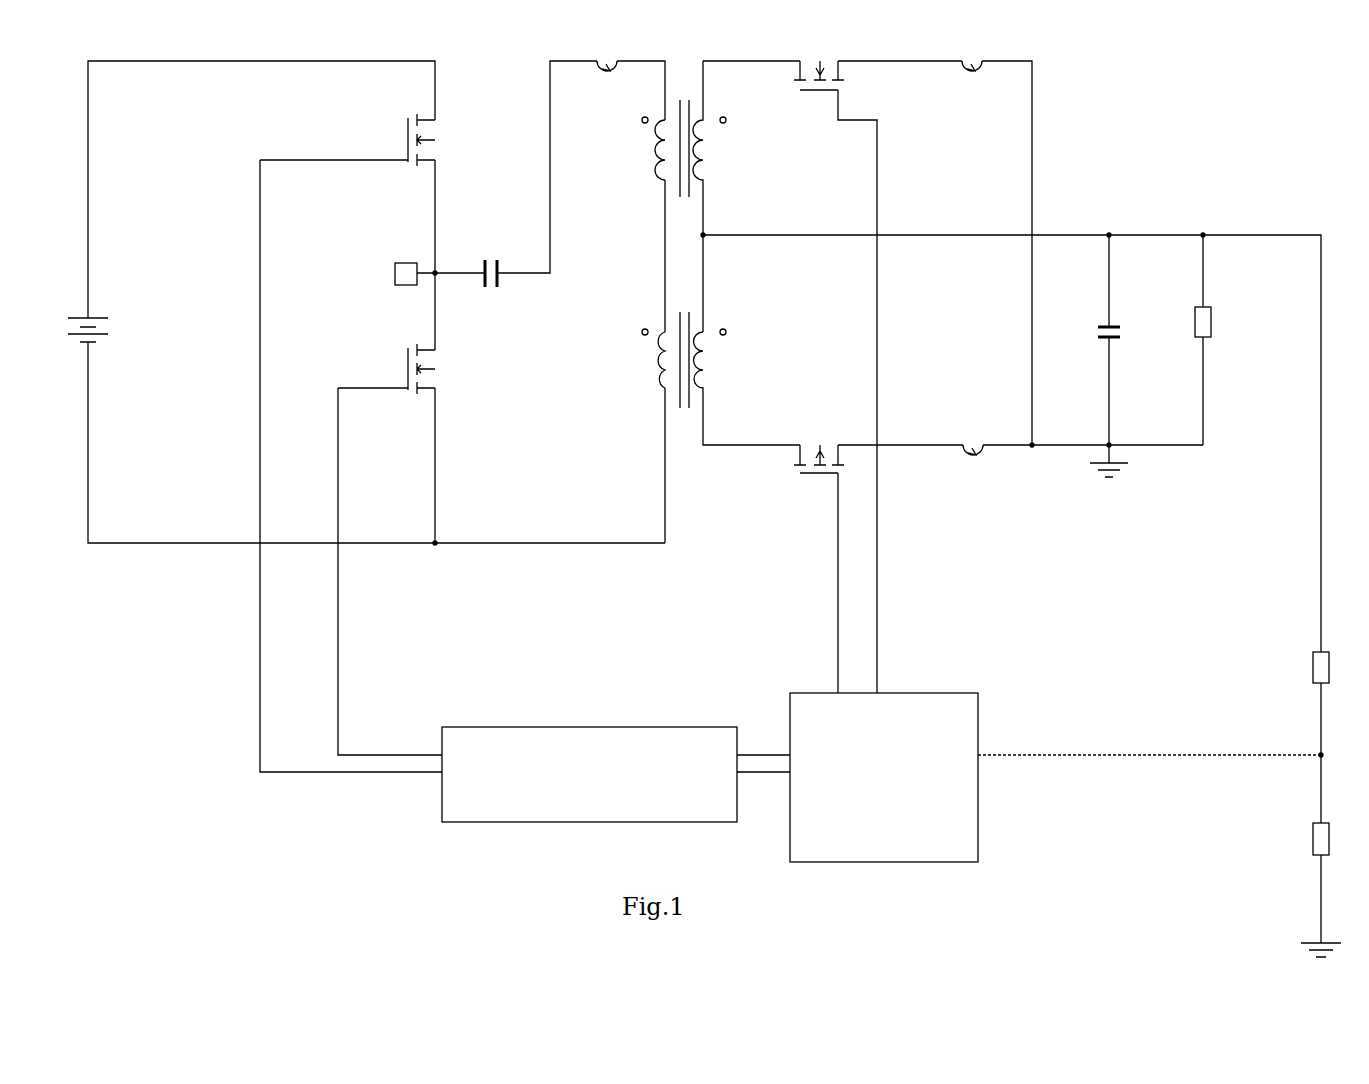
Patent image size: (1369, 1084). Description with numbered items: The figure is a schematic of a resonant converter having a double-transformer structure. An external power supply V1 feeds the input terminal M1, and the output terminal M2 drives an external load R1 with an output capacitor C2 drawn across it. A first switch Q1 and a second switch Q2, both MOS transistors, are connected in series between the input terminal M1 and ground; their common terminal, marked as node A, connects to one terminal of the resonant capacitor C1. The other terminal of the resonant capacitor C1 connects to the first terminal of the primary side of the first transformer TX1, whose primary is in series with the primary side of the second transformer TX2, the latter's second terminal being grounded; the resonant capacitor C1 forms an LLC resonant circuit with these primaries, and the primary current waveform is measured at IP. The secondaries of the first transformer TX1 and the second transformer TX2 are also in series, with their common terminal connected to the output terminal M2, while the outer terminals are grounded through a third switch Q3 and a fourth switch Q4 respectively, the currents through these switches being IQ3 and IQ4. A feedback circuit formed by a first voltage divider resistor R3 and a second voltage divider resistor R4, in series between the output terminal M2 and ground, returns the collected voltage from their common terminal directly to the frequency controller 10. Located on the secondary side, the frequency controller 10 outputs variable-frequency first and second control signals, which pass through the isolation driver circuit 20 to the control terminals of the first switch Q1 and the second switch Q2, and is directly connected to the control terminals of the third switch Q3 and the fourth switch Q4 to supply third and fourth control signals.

The frequency controller 10 is at (898, 693).
The isolation driver circuit 20 is at (638, 727).
The input terminal M1 is at (358, 295).
The output terminal M2 is at (1021, 583).
The external power supply V1 is at (98, 317).
The first switch Q1 is at (347, 151).
The second switch Q2 is at (386, 381).
The node A is at (399, 274).
The resonant capacitor C1 is at (458, 284).
The primary current measurement point IP is at (607, 55).
The first transformer TX1 is at (692, 196).
The second transformer TX2 is at (713, 378).
The third switch Q3 is at (790, 377).
The fourth switch Q4 is at (805, 569).
The current at the third switch IQ3 is at (935, 244).
The current at the fourth switch IQ4 is at (1020, 442).
The output capacitor C2 is at (1115, 356).
The external load R1 is at (1214, 340).
The first voltage divider resistor R3 is at (1331, 663).
The second voltage divider resistor R4 is at (1331, 834).